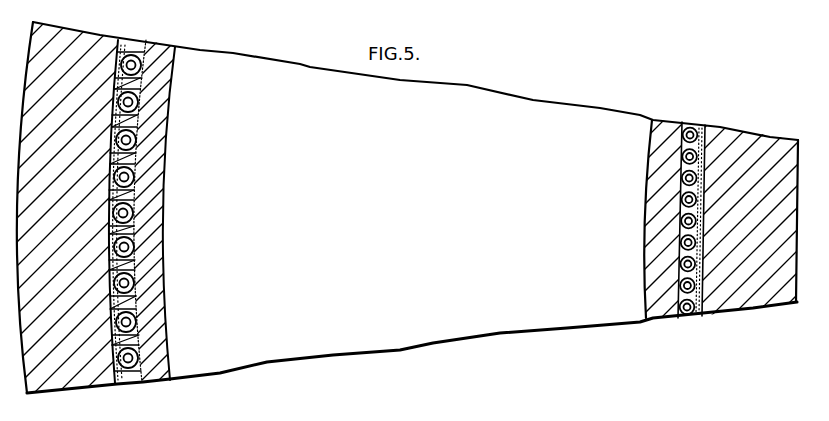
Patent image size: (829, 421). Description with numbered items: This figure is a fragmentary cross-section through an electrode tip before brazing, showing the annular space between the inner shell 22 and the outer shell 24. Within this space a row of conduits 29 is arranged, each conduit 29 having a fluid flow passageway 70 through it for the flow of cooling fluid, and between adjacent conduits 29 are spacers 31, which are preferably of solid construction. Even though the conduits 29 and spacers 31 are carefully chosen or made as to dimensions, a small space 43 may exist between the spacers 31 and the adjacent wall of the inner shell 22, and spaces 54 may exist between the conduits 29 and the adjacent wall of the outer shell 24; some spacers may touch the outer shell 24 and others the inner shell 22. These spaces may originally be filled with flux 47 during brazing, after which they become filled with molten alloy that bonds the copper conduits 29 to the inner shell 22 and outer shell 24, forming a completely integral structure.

The inner shell 22 is at (157, 374).
The outer shell 24 is at (92, 383).
The conduit 29 is at (136, 97).
The spacer 31 is at (130, 238).
The space 43 is at (135, 308).
The flux 47 is at (133, 193).
The space 54 is at (134, 297).
The fluid flow passageway 70 is at (132, 110).